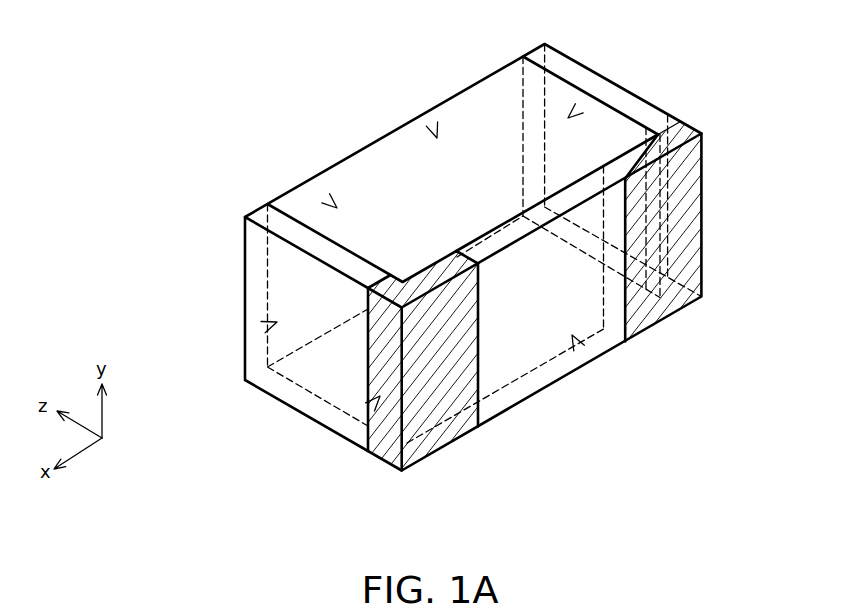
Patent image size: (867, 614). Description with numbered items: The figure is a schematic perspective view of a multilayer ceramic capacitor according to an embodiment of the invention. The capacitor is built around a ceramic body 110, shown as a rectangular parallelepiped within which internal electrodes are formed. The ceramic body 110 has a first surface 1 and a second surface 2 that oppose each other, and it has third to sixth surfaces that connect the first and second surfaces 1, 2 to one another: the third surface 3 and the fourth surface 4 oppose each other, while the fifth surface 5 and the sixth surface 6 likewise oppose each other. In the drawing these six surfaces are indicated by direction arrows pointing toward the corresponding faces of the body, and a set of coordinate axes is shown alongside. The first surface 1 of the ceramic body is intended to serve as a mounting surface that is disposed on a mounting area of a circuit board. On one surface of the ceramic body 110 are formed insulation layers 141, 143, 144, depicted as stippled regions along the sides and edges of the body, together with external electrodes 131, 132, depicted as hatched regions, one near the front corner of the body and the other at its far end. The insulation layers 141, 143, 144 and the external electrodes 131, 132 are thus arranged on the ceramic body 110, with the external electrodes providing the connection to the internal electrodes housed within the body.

The ceramic body 110 is at (280, 248).
The external electrode 131 is at (440, 447).
The external electrode 132 is at (668, 270).
The insulation layer 141 is at (518, 397).
The insulation layer 143 is at (303, 378).
The insulation layer 144 is at (633, 100).
The first surface 1 is at (572, 335).
The second surface 2 is at (337, 208).
The third surface 3 is at (277, 322).
The fourth surface 4 is at (568, 118).
The fifth surface 5 is at (437, 138).
The sixth surface 6 is at (380, 396).